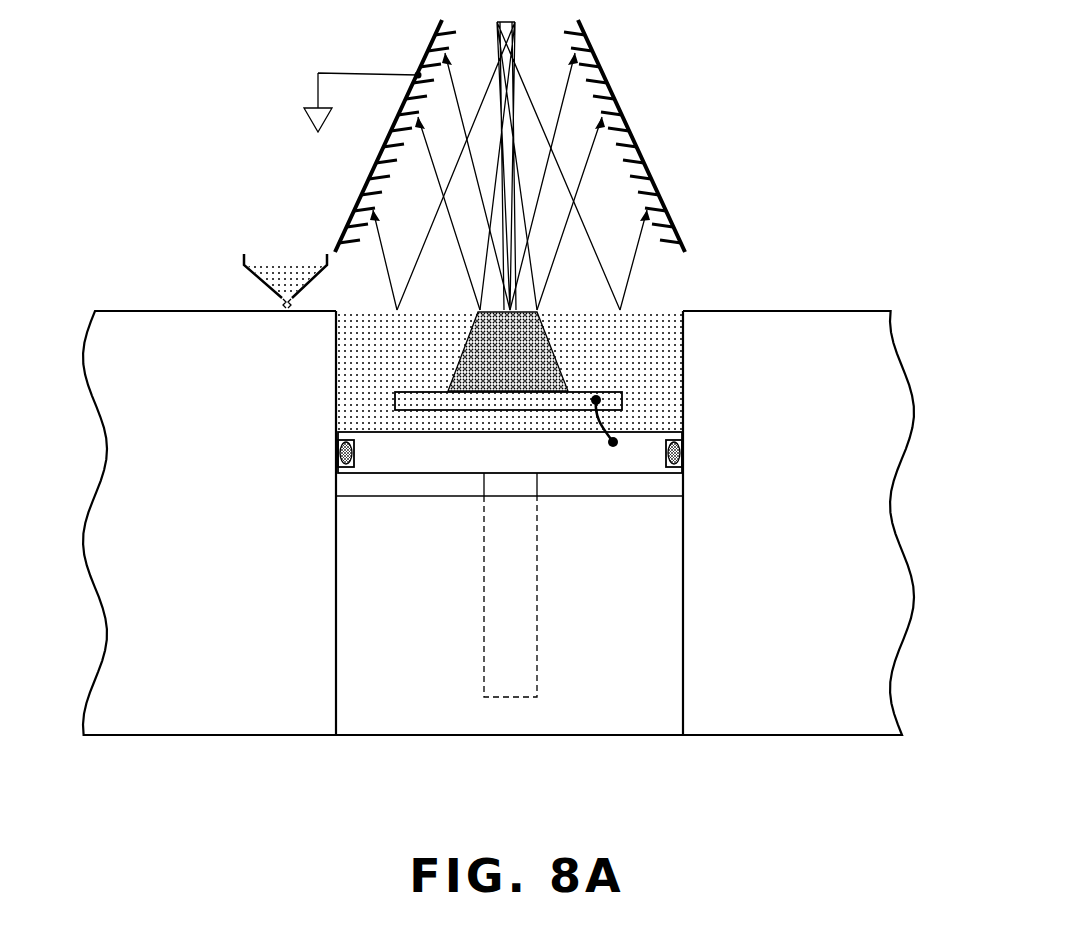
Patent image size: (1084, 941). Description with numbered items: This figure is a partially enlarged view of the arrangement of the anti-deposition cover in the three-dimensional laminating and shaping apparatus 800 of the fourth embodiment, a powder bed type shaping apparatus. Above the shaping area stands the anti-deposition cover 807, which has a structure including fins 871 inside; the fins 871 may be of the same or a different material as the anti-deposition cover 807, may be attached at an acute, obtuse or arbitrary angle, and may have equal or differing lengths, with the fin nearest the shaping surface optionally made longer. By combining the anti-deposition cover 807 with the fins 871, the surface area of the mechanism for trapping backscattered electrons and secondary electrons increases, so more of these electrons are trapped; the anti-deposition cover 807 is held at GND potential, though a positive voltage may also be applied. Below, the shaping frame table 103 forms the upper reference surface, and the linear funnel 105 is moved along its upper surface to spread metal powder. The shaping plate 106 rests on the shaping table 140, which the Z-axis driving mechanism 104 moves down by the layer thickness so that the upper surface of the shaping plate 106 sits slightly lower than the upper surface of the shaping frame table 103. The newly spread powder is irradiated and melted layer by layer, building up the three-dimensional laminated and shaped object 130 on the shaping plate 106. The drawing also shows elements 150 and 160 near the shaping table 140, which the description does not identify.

The three-dimensional laminating and shaping apparatus 800 is at (200, 107).
The anti-deposition cover 807 is at (625, 127).
The fins 871 is at (645, 183).
The linear funnel 105 is at (257, 278).
The shaping frame table 103 is at (838, 311).
The three-dimensional laminated and shaped object 130 is at (557, 358).
The electrode wire 150 is at (608, 432).
The seal member 160 is at (683, 450).
The shaping plate 106 is at (420, 398).
The shaping table 140 is at (567, 460).
The Z-axis driving mechanism 104 is at (507, 683).